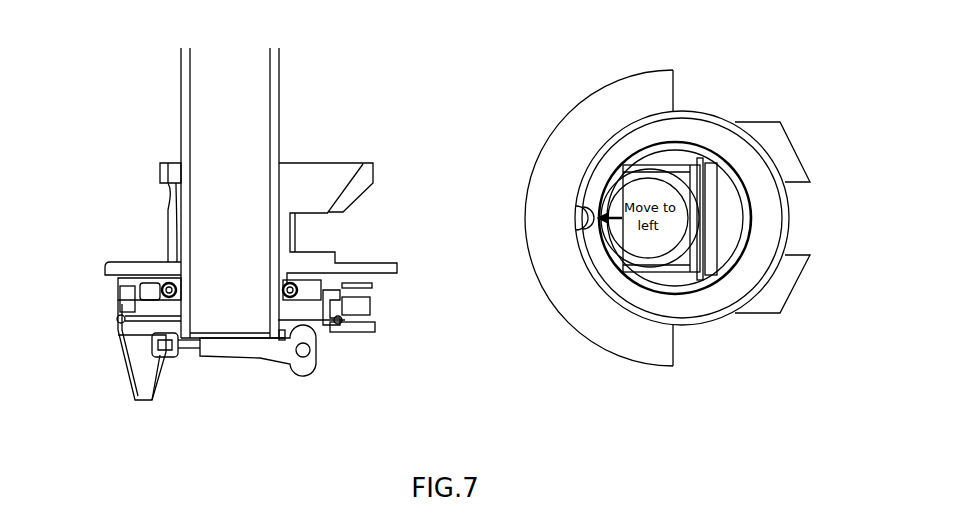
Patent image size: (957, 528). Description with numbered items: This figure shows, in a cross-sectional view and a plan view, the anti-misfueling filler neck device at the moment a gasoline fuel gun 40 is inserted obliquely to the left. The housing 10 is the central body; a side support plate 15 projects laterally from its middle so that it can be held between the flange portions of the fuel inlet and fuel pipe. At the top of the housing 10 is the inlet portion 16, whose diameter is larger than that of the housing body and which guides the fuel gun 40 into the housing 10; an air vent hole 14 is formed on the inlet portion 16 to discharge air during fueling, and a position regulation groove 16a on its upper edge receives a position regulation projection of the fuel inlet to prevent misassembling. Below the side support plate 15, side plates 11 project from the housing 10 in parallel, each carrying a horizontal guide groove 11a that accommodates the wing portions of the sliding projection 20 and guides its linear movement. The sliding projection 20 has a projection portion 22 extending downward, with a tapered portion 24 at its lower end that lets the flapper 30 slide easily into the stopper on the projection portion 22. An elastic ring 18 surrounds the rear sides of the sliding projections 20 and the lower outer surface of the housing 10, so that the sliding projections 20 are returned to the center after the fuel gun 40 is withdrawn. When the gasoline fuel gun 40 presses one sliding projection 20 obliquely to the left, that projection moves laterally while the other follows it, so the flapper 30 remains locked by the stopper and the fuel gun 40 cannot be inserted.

The housing 10 is at (356, 166).
The side plate 11 is at (370, 305).
The guide groove 11a is at (358, 286).
The air vent hole 14 is at (323, 217).
The side support plate 15 is at (112, 262).
The inlet portion 16 is at (305, 163).
The position regulation groove 16a is at (575, 215).
The elastic ring 18 is at (340, 325).
The sliding projection 20 is at (112, 318).
The projection portion 22 is at (117, 350).
The tapered portion 24 is at (158, 388).
The flapper 30 is at (234, 354).
The gasoline fuel gun 40 is at (181, 70).